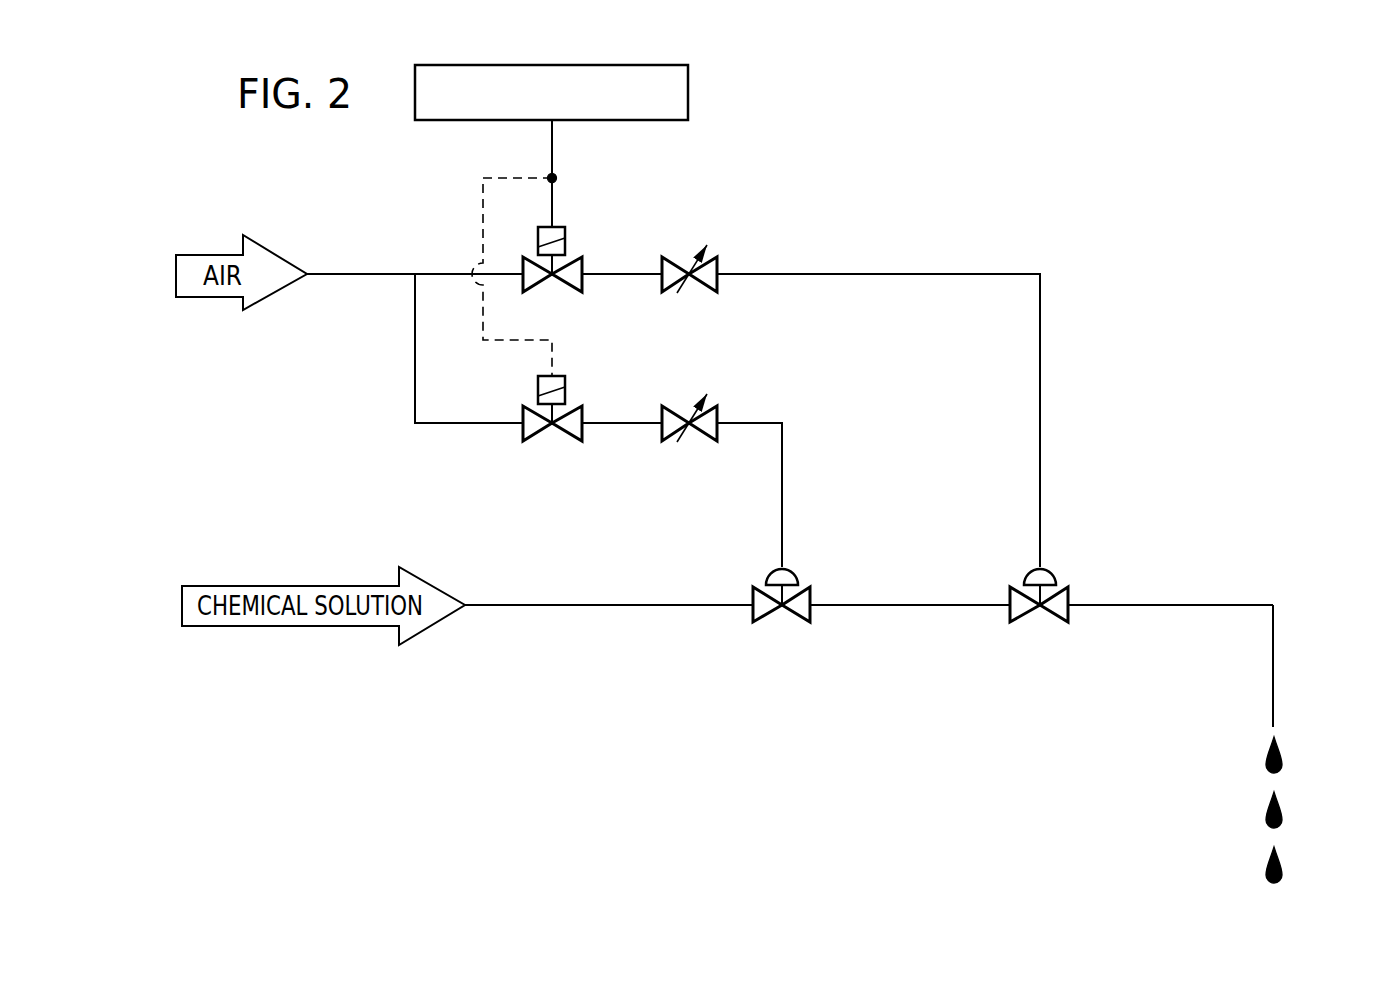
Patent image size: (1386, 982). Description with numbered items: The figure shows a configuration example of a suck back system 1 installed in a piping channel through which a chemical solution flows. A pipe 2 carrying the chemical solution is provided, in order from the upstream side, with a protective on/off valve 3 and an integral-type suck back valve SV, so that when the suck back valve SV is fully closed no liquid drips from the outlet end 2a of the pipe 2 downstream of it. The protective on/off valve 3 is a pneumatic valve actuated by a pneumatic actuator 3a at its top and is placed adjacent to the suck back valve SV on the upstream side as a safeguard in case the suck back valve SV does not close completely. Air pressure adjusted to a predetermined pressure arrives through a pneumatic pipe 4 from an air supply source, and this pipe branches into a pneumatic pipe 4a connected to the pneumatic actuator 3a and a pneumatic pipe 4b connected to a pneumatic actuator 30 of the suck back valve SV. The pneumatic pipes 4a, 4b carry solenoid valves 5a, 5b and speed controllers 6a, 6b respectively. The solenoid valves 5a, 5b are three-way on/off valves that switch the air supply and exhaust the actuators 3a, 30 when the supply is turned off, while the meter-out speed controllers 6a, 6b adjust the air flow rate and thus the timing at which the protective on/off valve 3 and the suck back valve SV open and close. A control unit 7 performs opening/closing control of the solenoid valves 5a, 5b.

The suck back system 1 is at (1132, 272).
The pipe 2 is at (597, 603).
The outlet end 2a is at (1273, 648).
The protective on/off valve 3 is at (812, 588).
The pneumatic actuator 3a is at (790, 567).
The pneumatic pipe 4 is at (360, 273).
The pneumatic pipe 4a is at (463, 422).
The pneumatic pipe 4b is at (445, 273).
The solenoid valve 5a is at (582, 415).
The solenoid valve 5b is at (582, 263).
The speed controller 6a is at (718, 415).
The speed controller 6b is at (717, 263).
The control unit 7 is at (688, 90).
The pneumatic actuator 30 is at (1045, 567).
The integral-type suck back valve SV is at (1075, 587).